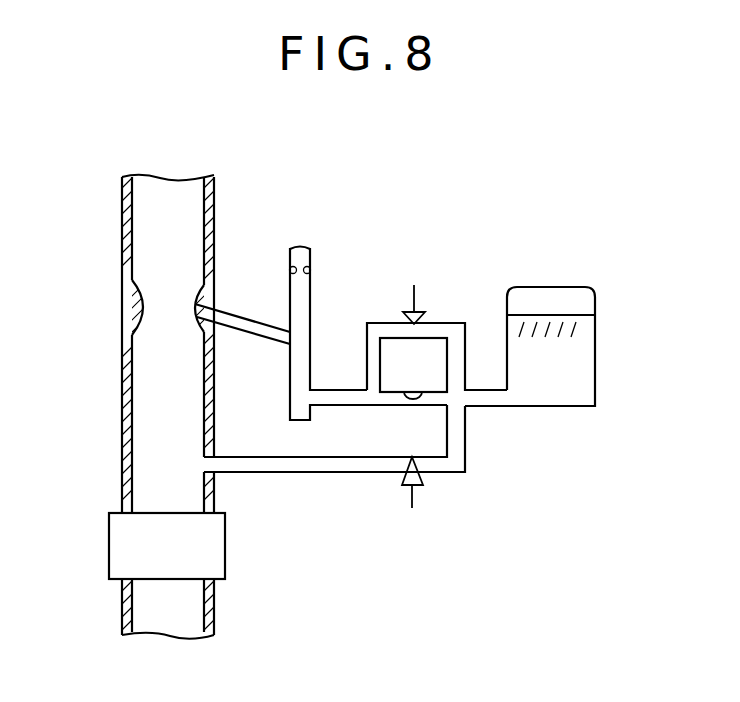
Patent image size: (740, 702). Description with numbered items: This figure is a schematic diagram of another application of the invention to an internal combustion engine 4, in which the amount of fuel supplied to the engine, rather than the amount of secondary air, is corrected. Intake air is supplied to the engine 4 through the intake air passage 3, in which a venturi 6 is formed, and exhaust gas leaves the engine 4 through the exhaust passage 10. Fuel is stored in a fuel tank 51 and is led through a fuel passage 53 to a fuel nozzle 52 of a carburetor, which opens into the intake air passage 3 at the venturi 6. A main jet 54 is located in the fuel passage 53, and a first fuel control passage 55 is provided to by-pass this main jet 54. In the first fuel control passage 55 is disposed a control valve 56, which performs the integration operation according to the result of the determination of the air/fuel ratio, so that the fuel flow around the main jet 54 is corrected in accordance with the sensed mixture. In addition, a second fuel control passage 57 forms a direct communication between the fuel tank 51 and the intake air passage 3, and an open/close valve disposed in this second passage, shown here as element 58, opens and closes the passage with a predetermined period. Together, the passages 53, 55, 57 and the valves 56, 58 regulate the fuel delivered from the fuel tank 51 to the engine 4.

The intake air passage 3 is at (138, 378).
The internal combustion engine 4 is at (226, 540).
The venturi 6 is at (145, 298).
The exhaust passage 10 is at (136, 594).
The fuel tank 51 is at (595, 297).
The fuel nozzle 52 is at (198, 307).
The fuel passage 53 is at (335, 412).
The main jet 54 is at (410, 404).
The first fuel control passage 55 is at (452, 322).
The control valve 56 is at (410, 313).
The second fuel control passage 57 is at (333, 476).
The outlet valve 58 is at (423, 476).